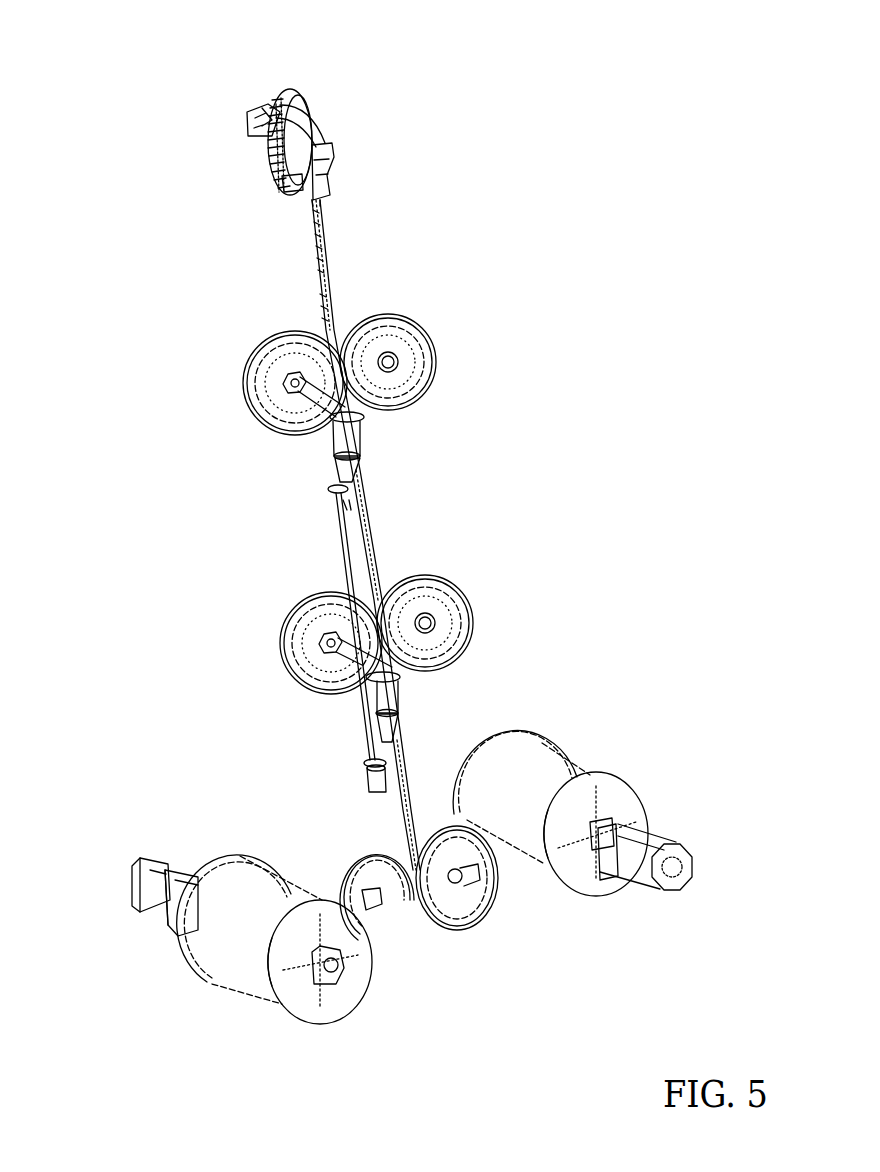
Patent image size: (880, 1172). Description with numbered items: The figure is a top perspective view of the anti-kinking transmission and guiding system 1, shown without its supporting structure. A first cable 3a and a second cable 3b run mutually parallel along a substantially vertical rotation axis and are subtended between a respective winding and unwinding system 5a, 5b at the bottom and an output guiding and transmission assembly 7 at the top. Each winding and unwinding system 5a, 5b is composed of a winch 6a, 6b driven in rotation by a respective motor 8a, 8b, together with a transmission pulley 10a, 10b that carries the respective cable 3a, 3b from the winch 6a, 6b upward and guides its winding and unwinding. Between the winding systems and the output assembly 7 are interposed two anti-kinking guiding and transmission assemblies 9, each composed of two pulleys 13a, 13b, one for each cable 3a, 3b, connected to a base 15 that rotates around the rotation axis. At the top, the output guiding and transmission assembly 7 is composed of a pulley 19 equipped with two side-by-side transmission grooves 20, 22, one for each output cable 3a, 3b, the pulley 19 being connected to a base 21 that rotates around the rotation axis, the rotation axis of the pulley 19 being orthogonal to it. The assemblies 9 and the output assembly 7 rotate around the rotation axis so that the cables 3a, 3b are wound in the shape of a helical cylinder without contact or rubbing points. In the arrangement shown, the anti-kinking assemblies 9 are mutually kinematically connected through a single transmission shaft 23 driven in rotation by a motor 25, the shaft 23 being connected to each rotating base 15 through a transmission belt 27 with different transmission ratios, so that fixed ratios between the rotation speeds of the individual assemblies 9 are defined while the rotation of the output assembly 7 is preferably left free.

The anti-kinking transmission and guiding system 1 is at (623, 87).
The output guiding and transmission assembly 7 is at (238, 98).
The pulley 19 is at (299, 108).
The transmission groove 20 is at (268, 152).
The base 21 is at (321, 190).
The transmission groove 22 is at (290, 182).
The first cable 3a is at (333, 316).
The second cable 3b is at (322, 285).
The anti-kinking guiding and transmission assembly 9 is at (452, 352).
The pulley 13a is at (412, 385).
The pulley 13b is at (260, 385).
The base 15 is at (343, 438).
The transmission belt 27 is at (352, 468).
The transmission shaft 23 is at (345, 541).
The motor 25 is at (376, 787).
The winding and unwinding system 5a is at (650, 750).
The winch 6a is at (543, 786).
The motor 8a is at (668, 875).
The transmission pulley 10a is at (441, 907).
The winding and unwinding system 5b is at (207, 1016).
The winch 6b is at (245, 972).
The motor 8b is at (152, 902).
The transmission pulley 10b is at (349, 900).